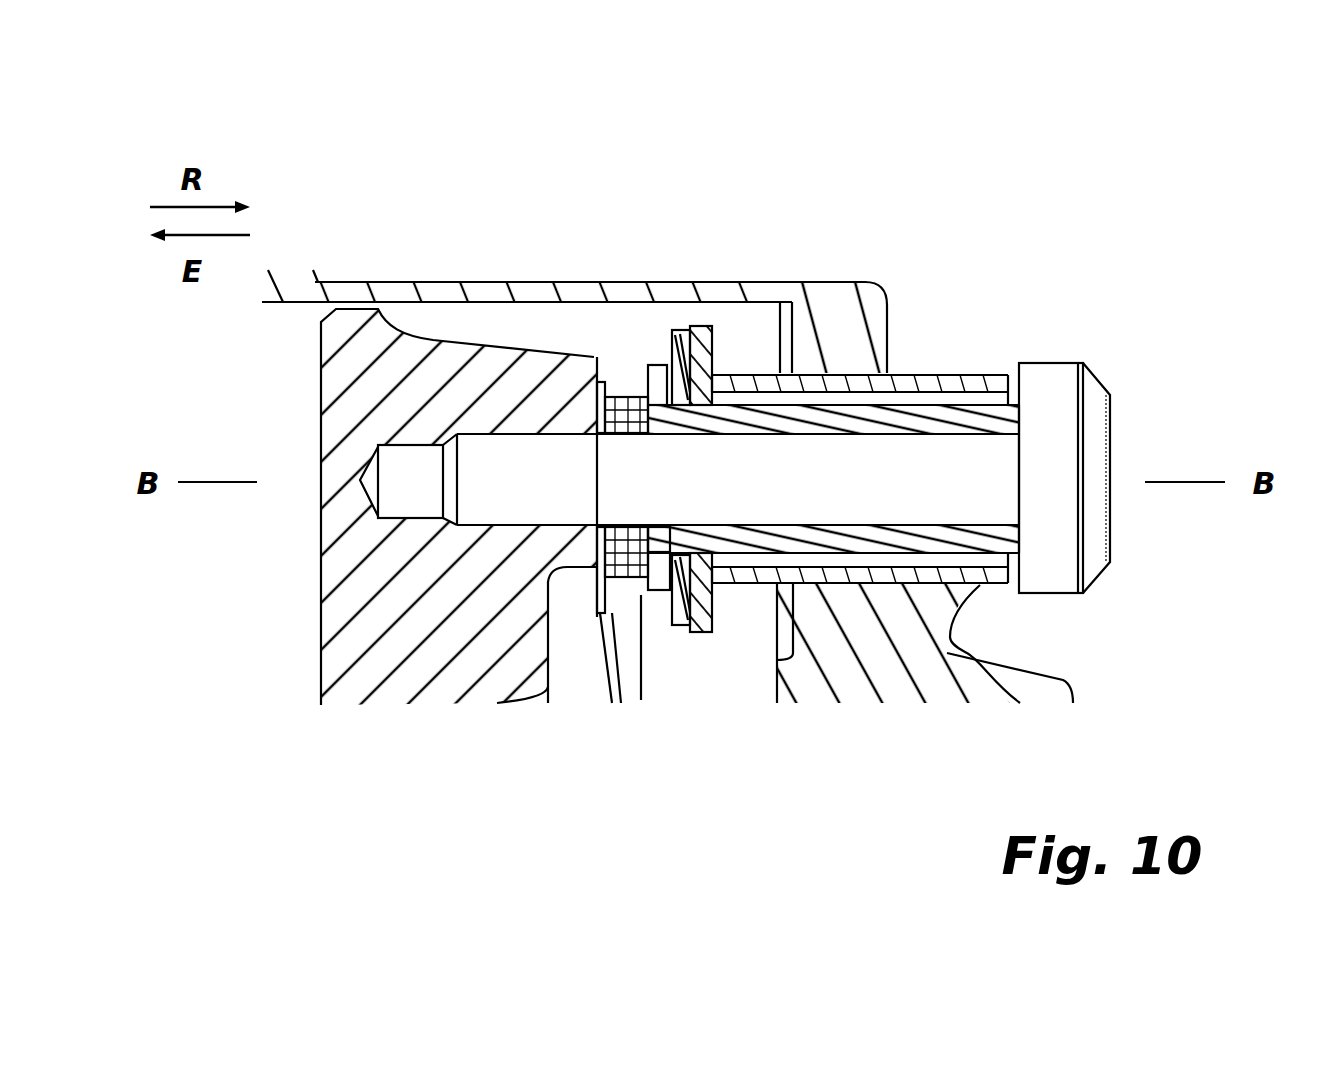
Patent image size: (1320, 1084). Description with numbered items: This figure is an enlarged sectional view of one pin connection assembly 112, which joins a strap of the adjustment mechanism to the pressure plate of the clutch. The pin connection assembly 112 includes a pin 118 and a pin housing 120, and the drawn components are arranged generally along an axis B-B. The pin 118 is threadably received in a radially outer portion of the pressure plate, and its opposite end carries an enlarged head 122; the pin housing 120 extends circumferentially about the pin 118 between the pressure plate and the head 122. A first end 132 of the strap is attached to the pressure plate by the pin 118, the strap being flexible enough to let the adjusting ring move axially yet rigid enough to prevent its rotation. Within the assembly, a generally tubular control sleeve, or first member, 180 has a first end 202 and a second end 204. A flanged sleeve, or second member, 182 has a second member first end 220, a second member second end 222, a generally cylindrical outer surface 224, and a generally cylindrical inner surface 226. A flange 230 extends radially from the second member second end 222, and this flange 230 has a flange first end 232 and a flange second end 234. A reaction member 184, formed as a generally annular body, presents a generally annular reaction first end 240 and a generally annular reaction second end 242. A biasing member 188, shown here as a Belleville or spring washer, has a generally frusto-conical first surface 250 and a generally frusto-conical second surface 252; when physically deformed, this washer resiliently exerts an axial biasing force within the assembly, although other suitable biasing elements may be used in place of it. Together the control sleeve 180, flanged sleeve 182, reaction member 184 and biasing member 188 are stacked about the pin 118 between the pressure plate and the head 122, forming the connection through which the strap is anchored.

The pin connection assembly 112 is at (1128, 598).
The pin 118 is at (938, 410).
The pin housing 120 is at (925, 178).
The enlarged head 122 is at (1063, 390).
The first end 132 is at (597, 355).
The control sleeve 180 is at (903, 373).
The flanged sleeve 182 is at (942, 455).
The reaction member 184 is at (708, 350).
The biasing member 188 is at (648, 377).
The first end 202 is at (1008, 378).
The second end 204 is at (717, 370).
The second member first end 220 is at (1012, 412).
The second member second end 222 is at (614, 397).
The outer surface 224 is at (980, 525).
The inner surface 226 is at (887, 583).
The flange 230 is at (641, 700).
The flange first end 232 is at (605, 613).
The flange second end 234 is at (692, 635).
The reaction first end 240 is at (715, 352).
The reaction second end 242 is at (680, 330).
The first surface 250 is at (713, 590).
The second surface 252 is at (666, 617).